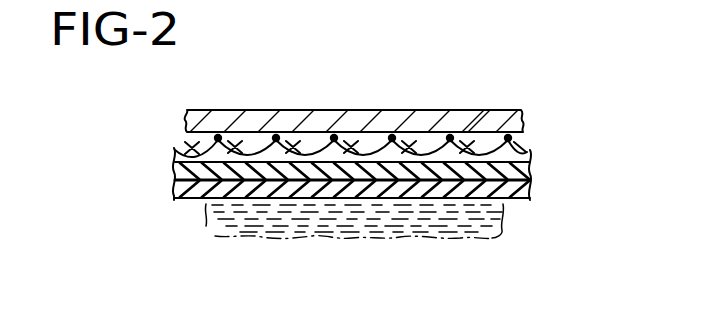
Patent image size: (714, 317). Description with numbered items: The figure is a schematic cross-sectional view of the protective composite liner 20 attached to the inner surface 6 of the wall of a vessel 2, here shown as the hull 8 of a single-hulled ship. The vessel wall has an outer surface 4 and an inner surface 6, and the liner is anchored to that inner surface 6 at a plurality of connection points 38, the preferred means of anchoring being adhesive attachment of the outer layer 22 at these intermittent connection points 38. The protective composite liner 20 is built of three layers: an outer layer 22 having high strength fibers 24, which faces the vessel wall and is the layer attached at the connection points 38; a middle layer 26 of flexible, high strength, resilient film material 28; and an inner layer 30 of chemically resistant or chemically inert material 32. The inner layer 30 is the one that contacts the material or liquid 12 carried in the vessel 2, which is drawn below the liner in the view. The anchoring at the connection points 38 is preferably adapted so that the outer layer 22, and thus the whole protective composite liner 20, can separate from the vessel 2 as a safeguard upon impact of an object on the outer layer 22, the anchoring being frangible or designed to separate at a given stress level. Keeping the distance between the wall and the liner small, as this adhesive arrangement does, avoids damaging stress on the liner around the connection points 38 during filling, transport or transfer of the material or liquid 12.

The vessel 2 is at (356, 86).
The vessel outer surface 4 is at (385, 111).
The inner surface 6 is at (458, 139).
The hull 8 is at (503, 127).
The material or liquid 12 is at (298, 220).
The protective composite liner 20 is at (195, 207).
The outer layer 22 is at (164, 152).
The high strength fibers 24 is at (527, 152).
The middle layer 26 is at (166, 170).
The resilient film material 28 is at (533, 172).
The inner layer 30 is at (166, 188).
The chemically resistant or chemically inert material 32 is at (535, 193).
The connection points 38 is at (334, 134).